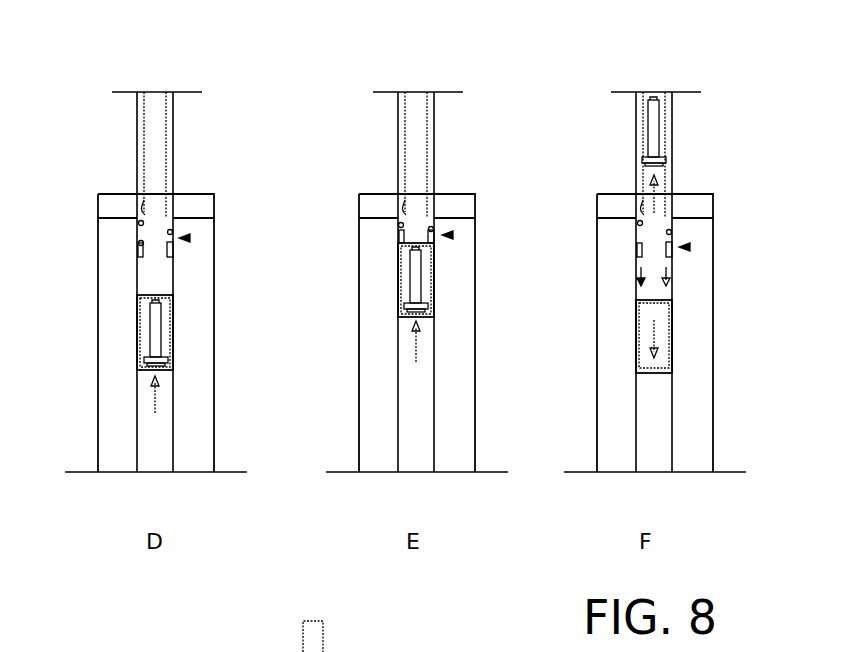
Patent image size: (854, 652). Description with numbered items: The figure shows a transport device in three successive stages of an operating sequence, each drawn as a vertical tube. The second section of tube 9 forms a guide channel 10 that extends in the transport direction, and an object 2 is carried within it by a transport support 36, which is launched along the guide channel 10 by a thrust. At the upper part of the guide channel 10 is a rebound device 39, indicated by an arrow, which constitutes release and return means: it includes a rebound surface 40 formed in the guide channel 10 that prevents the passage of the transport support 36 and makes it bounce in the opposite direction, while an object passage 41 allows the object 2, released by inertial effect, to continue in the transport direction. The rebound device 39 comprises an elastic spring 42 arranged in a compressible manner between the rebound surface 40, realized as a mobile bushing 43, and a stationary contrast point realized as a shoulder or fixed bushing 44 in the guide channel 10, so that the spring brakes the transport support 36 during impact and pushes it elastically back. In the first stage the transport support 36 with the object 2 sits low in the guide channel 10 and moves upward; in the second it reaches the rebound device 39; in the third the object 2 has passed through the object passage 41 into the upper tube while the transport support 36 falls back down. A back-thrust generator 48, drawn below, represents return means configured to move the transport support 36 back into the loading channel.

The object 2 is at (150, 332).
The second section of tube 9 is at (177, 155).
The guide channel 10 is at (173, 403).
The transport support 36 is at (173, 323).
The rebound device 39 is at (190, 238).
The rebound surface 40 is at (142, 265).
The object passage 41 is at (143, 210).
The elastic spring 42 is at (172, 231).
The mobile bushing 43 is at (173, 253).
The fixed bushing 44 is at (140, 212).
The back-thrust generator 48 is at (317, 640).